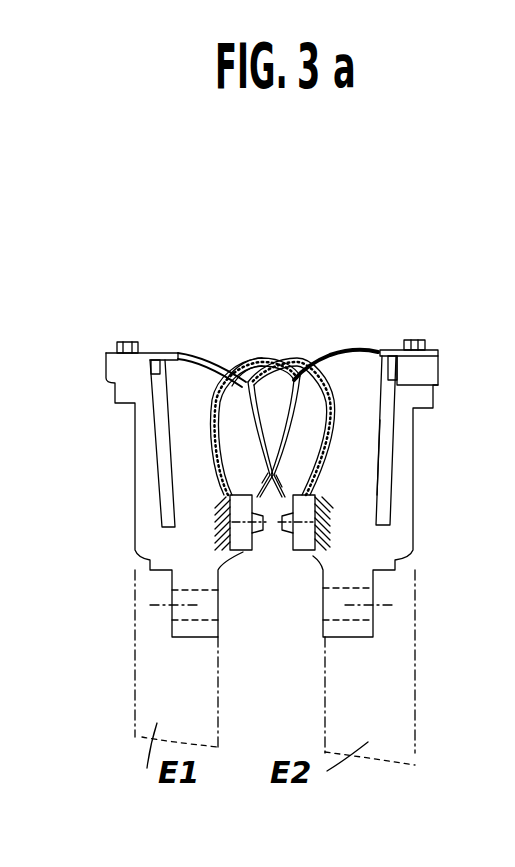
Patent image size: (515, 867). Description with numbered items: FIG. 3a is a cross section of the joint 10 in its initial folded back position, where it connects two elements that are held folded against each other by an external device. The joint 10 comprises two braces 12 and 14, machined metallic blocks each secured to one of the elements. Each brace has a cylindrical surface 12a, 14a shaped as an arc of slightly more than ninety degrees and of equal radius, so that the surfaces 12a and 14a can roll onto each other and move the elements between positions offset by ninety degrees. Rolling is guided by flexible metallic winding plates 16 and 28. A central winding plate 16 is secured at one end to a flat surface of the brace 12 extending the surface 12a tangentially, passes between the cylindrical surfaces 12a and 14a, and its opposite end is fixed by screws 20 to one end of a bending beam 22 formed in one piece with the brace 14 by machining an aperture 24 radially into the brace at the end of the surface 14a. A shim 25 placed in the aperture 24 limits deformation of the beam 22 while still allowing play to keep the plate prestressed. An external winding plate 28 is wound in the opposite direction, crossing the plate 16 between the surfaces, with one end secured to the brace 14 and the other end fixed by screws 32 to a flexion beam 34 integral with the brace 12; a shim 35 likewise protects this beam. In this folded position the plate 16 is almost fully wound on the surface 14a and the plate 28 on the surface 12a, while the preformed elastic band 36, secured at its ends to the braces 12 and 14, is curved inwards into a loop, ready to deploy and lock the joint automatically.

The joint 10 is at (278, 237).
The brace 12 is at (173, 542).
The cylindrical surface 12a is at (273, 357).
The brace 14 is at (378, 513).
The cylindrical surface 14a is at (338, 346).
The central winding plate 16 is at (372, 344).
The screw 20 is at (405, 340).
The bending beam 22 is at (412, 462).
The aperture 24 is at (385, 488).
The shim 25 is at (430, 383).
The external winding plate 28 is at (206, 352).
The screw 32 is at (130, 342).
The flexion beam 34 is at (135, 505).
The shim 35 is at (150, 374).
The preformed elastic band 36 is at (250, 355).